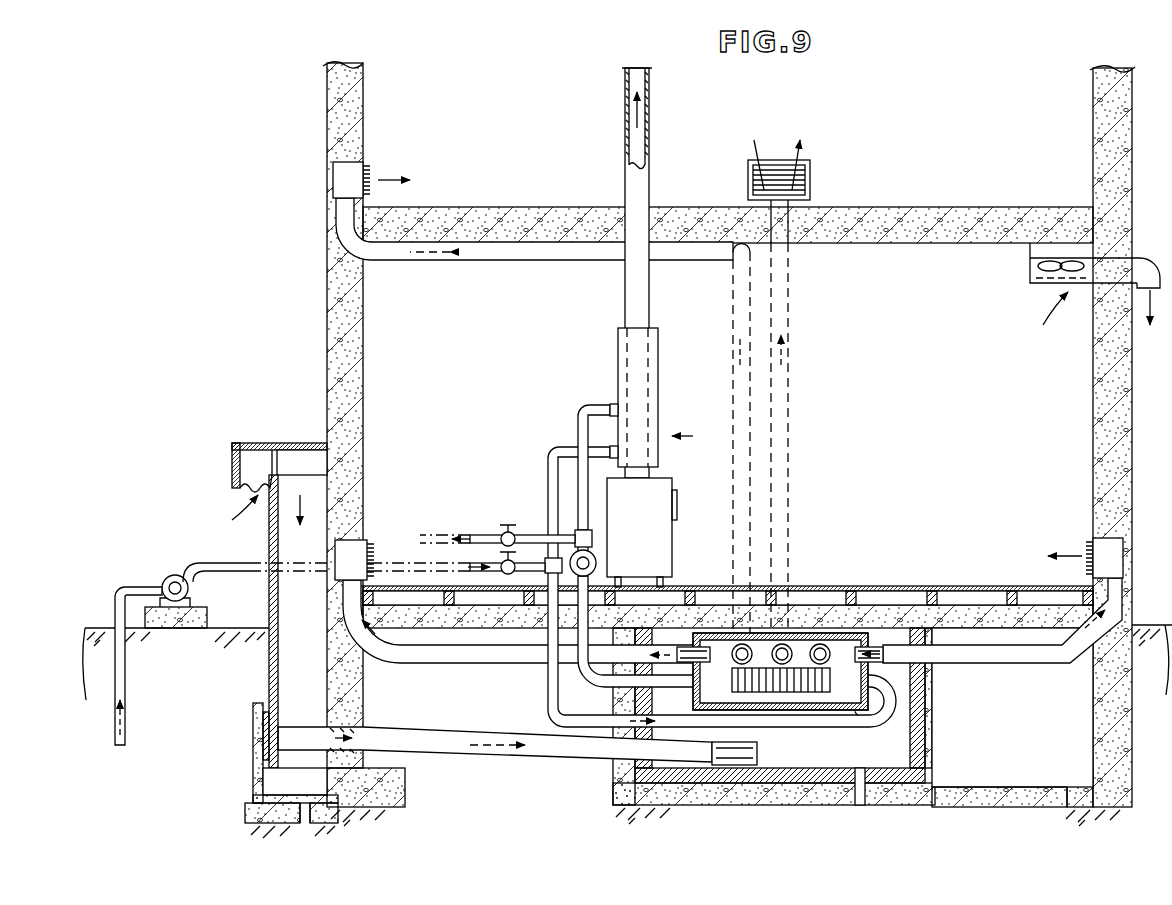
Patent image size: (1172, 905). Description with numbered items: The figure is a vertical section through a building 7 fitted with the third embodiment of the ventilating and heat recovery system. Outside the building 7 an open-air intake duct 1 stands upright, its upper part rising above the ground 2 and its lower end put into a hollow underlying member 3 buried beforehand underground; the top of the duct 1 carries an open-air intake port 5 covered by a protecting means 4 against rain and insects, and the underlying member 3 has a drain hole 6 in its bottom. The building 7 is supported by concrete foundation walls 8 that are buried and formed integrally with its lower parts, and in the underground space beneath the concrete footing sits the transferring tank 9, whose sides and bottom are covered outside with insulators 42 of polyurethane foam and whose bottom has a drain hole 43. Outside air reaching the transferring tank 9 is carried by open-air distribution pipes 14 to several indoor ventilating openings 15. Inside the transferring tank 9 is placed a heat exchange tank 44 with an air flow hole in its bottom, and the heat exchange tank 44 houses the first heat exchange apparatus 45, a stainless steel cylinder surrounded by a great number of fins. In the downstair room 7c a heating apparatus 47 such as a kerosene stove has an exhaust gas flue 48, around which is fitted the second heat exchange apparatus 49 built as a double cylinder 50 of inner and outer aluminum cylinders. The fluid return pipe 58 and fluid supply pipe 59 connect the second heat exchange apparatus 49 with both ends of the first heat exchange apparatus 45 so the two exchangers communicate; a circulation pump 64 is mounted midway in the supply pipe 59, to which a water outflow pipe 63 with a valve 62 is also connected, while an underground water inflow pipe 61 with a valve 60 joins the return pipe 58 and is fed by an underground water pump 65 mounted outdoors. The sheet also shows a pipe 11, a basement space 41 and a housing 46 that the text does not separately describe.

The open-air intake duct 1 is at (268, 662).
The ground 2 is at (113, 628).
The hollow underlying member 3 is at (253, 733).
The protecting means 4 is at (262, 445).
The open-air intake port 5 is at (303, 460).
The drain hole 6 is at (305, 818).
The building 7 is at (325, 232).
The downstair room 7c is at (924, 502).
The concrete foundation walls 8 is at (1118, 732).
The transferring tank 9 is at (843, 790).
The air supply pipe 11 is at (548, 752).
The open-air distribution pipes 14 is at (522, 250).
The indoor ventilating openings 15 is at (370, 164).
The basement room 41 is at (1008, 755).
The insulators 42 is at (776, 786).
The drain hole 43 is at (859, 806).
The heat exchange tank 44 is at (862, 712).
The first heat exchange apparatus 45 is at (820, 694).
The heat exchanger housing 46 is at (793, 712).
The heating apparatus 47 is at (650, 512).
The exhaust gas flue 48 is at (626, 290).
The second heat exchange apparatus 49 is at (694, 437).
The double cylinder 50 is at (645, 345).
The fluid return pipe 58 is at (556, 457).
The fluid supply pipe 59 is at (584, 410).
The valve 60 is at (502, 558).
The underground water inflow pipe 61 is at (468, 566).
The valve 62 is at (508, 524).
The water outflow pipe 63 is at (537, 537).
The circulation pump 64 is at (598, 562).
The underground water pump 65 is at (178, 572).